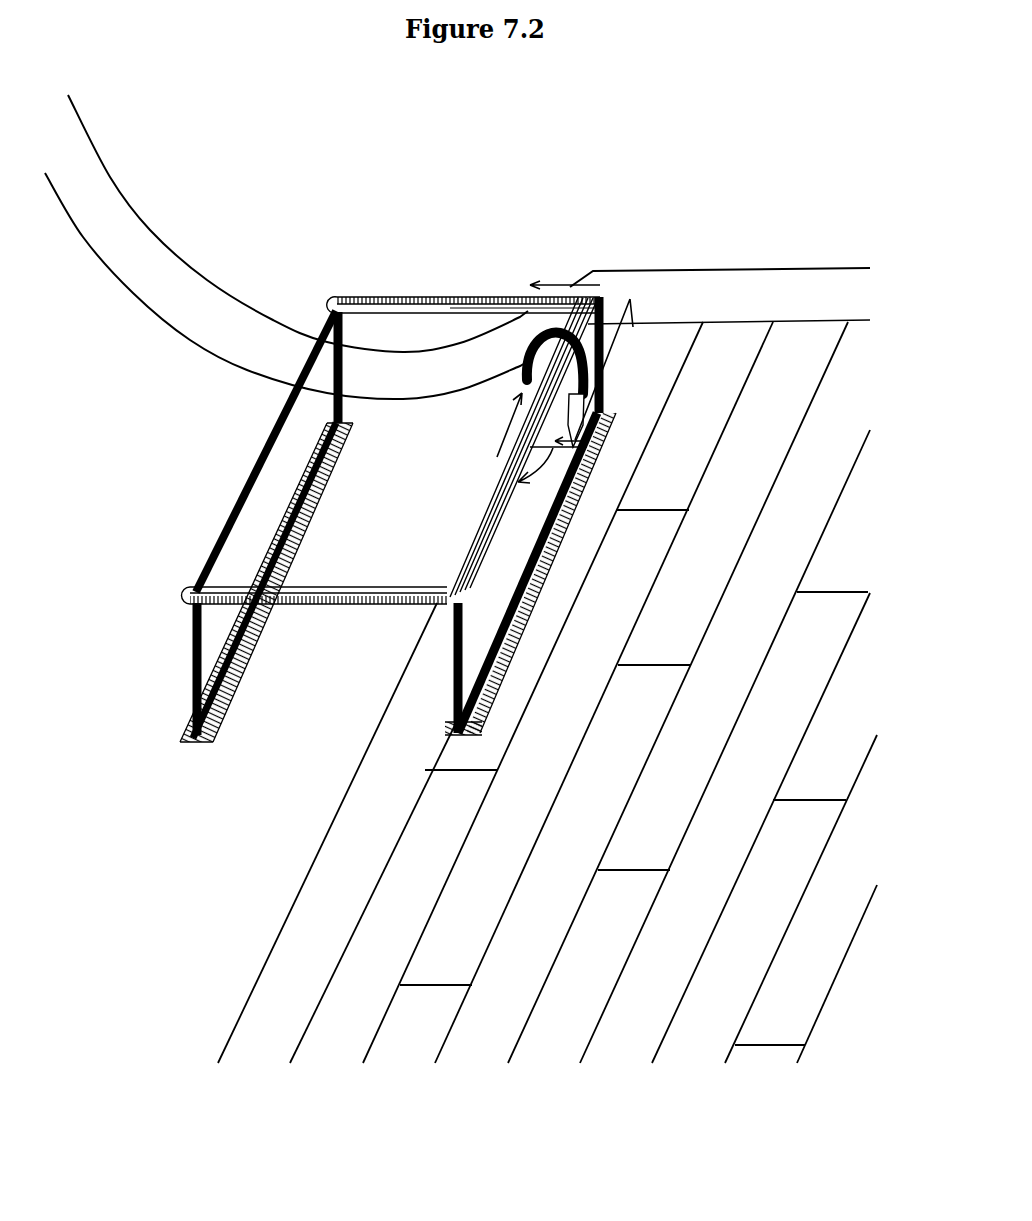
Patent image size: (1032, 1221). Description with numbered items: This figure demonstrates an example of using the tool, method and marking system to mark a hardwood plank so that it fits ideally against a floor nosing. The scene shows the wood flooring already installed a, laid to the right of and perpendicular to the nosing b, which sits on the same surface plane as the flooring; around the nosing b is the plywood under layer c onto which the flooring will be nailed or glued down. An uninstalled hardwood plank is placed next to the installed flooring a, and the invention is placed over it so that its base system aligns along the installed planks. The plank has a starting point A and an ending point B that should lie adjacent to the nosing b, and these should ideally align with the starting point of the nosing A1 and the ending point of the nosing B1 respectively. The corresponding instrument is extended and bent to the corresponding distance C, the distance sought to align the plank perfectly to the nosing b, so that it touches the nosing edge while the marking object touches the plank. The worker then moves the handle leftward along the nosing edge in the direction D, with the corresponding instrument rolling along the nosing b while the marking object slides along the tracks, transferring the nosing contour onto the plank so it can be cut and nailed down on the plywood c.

The wood flooring already installed a is at (547, 692).
The nosing b is at (700, 296).
The plywood (under layer) c is at (398, 583).
The starting point of the uninstalled wood plank A is at (576, 430).
The starting point of the nosing A1 is at (624, 360).
The ending point of the uninstalled wood plank B is at (524, 447).
The ending point of the nosing B1 is at (543, 355).
The corresponding distance C is at (501, 425).
The direction of the marking object D is at (531, 486).